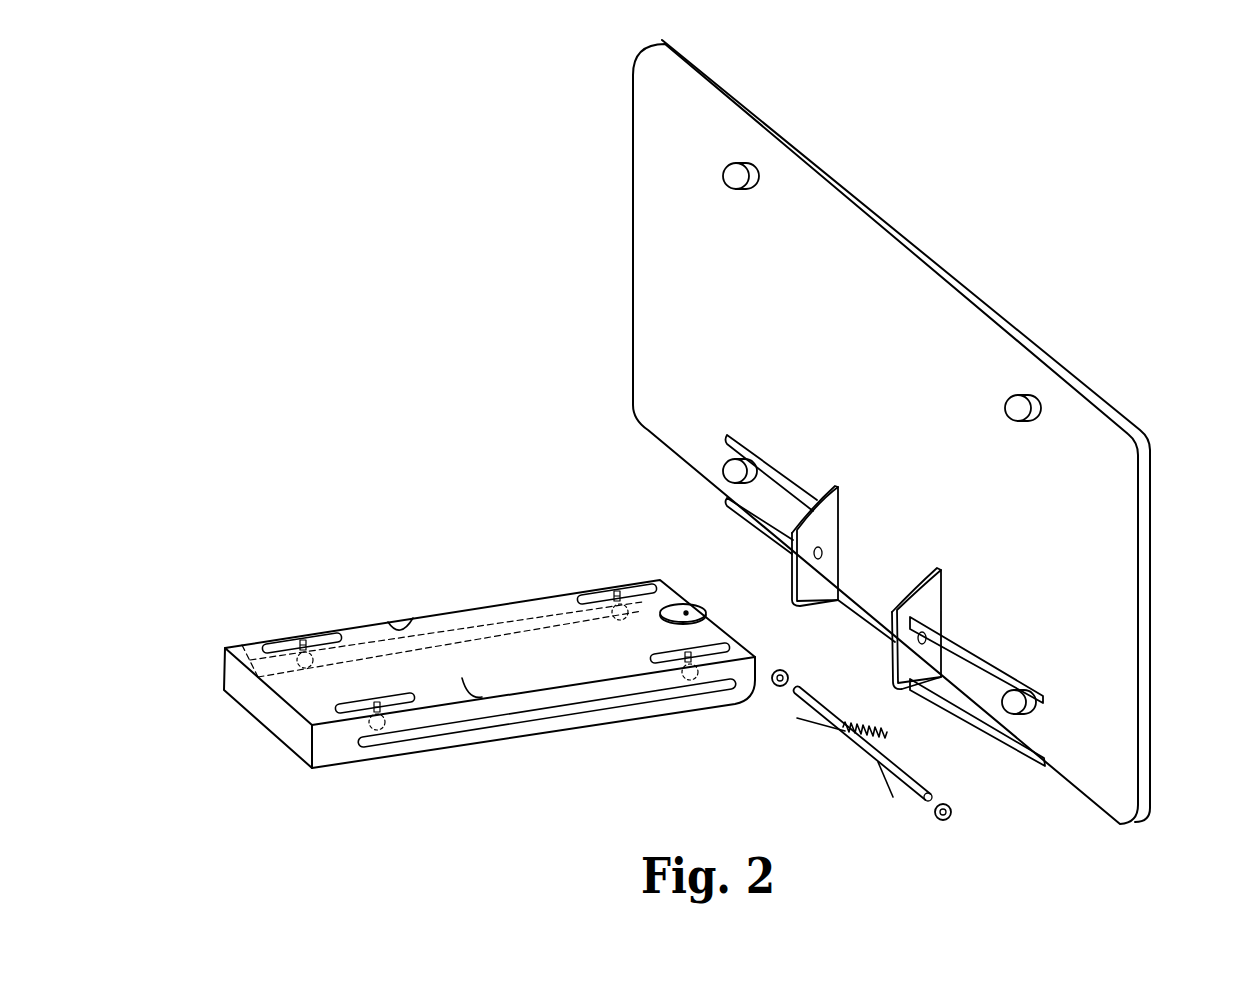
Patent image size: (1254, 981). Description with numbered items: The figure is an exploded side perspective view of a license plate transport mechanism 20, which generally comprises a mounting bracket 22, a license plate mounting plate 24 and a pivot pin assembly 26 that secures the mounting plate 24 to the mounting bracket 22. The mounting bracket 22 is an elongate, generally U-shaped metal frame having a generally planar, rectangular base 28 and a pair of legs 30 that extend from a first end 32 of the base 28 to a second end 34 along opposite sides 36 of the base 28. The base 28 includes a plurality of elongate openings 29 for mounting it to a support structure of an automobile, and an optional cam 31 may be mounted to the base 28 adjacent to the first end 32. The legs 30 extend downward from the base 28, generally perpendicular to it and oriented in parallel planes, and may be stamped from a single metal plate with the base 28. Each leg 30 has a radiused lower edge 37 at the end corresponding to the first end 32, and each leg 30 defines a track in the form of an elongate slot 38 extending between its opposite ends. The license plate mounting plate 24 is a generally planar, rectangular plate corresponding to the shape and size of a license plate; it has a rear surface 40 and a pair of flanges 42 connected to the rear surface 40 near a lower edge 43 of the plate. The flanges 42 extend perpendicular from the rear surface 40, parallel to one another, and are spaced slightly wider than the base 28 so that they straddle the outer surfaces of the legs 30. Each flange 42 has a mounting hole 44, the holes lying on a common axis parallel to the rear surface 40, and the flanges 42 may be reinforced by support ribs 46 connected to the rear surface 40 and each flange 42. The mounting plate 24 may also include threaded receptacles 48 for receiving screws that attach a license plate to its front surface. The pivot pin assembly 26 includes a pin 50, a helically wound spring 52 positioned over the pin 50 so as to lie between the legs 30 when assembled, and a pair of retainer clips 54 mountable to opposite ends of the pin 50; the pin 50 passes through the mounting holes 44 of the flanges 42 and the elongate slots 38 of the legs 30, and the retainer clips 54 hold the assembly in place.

The license plate transport mechanism 20 is at (1168, 362).
The mounting bracket 22 is at (297, 695).
The license plate mounting plate 24 is at (1150, 650).
The pivot pin assembly 26 is at (906, 792).
The base 28 is at (516, 676).
The elongate openings 29 is at (592, 597).
The legs 30 is at (222, 692).
The cam 31 is at (692, 608).
The first end 32 is at (661, 581).
The second end 34 is at (304, 727).
The opposite sides 36 is at (400, 623).
The radiused lower edge 37 is at (581, 735).
The elongate slot 38 is at (244, 650).
The rear surface 40 is at (861, 418).
The flanges 42 is at (822, 502).
The lower edge 43 is at (867, 623).
The mounting hole 44 is at (923, 633).
The support ribs 46 is at (777, 480).
The threaded receptacles 48 is at (748, 177).
The pin 50 is at (831, 710).
The spring 52 is at (815, 726).
The retainer clips 54 is at (784, 662).